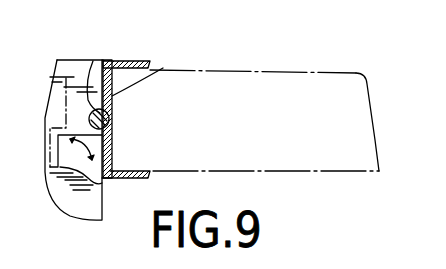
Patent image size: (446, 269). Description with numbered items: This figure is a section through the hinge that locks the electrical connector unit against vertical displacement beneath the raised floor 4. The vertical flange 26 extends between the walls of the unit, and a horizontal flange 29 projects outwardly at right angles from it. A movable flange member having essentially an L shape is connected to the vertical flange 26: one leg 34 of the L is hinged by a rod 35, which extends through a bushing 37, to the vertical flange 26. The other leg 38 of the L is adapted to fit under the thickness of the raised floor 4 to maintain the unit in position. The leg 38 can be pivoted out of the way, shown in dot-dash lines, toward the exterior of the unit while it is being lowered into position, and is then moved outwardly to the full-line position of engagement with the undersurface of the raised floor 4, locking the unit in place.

The raised floor 4 is at (272, 78).
The vertical flange 26 is at (143, 78).
The horizontal flange 29 is at (138, 63).
The leg 34 is at (65, 73).
The rod 35 is at (108, 123).
The bushing 37 is at (93, 61).
The leg 38 is at (102, 182).